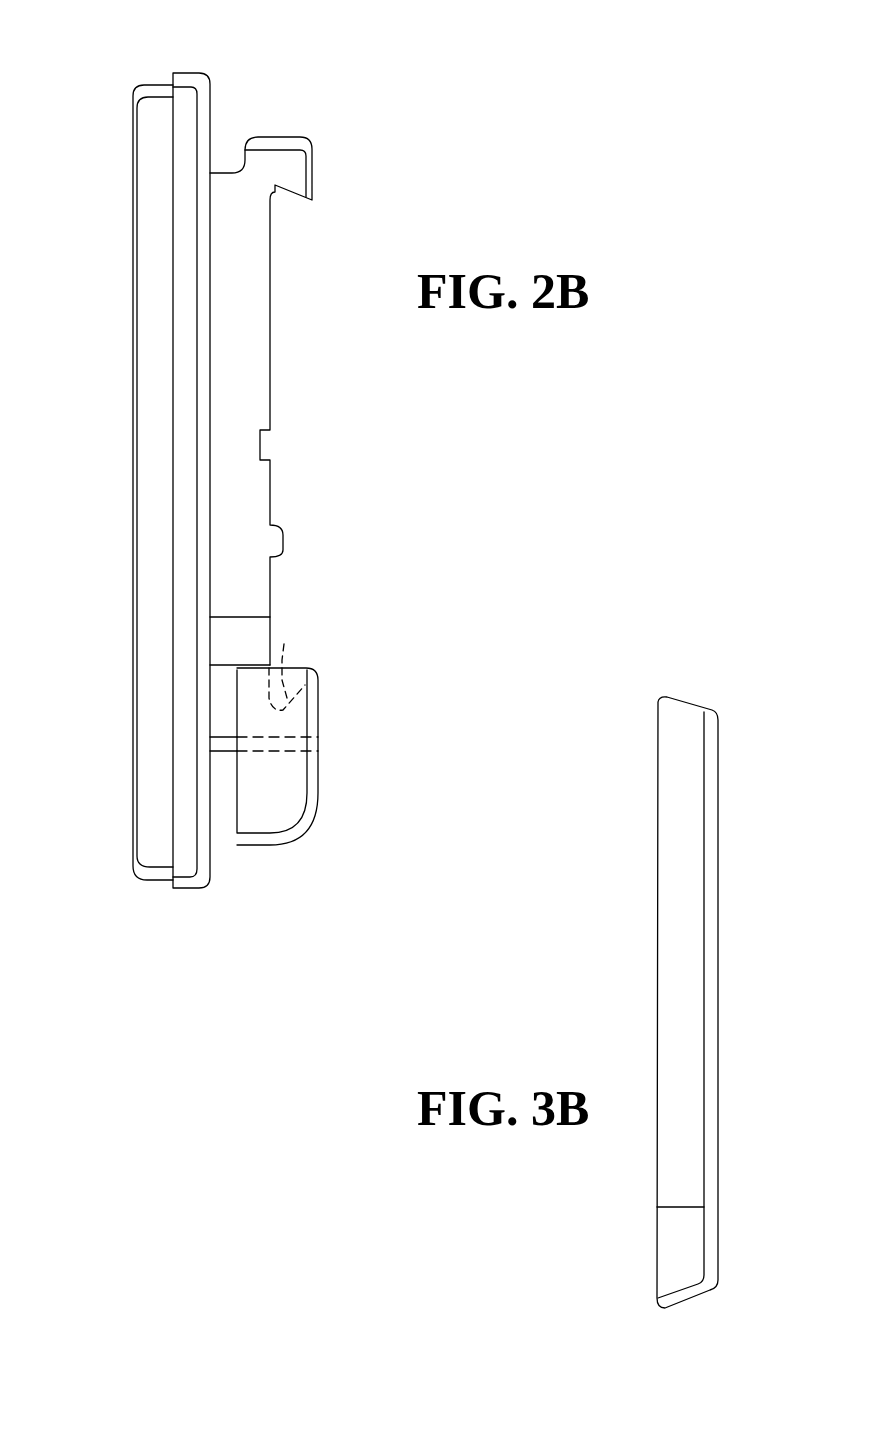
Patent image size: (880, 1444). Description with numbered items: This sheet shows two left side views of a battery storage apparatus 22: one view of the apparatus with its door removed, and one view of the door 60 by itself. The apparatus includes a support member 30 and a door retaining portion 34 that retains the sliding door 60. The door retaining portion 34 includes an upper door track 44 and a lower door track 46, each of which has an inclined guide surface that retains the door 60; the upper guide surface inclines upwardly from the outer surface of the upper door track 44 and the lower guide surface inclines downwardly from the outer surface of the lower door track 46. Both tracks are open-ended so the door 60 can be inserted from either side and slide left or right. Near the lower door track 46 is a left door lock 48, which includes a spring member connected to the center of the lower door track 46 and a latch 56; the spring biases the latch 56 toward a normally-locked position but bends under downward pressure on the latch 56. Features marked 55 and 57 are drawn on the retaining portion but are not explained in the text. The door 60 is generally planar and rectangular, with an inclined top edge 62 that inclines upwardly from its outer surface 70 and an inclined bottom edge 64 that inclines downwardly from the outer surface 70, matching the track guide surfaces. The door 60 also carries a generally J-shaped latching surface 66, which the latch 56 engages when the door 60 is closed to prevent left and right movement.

In FIG. 2B, the battery storage apparatus 22 is at (116, 62).
In FIG. 2B, the support member 30 is at (134, 243).
In FIG. 2B, the door retaining portion 34 is at (272, 137).
In FIG. 2B, the upper door track 44 is at (287, 164).
In FIG. 2B, the tab edge 55 is at (293, 193).
In FIG. 2B, the lower door track 46 is at (290, 725).
In FIG. 2B, the left door lock 48 is at (320, 803).
In FIG. 2B, the latch 56 is at (272, 818).
In FIG. 2B, the hidden tab 57 is at (285, 640).
In FIG. 3B, the door 60 is at (638, 684).
In FIG. 3B, the top edge 62 is at (692, 702).
In FIG. 3B, the bottom edge 64 is at (688, 1303).
In FIG. 3B, the latching surface 66 is at (685, 1245).
In FIG. 3B, the outer surface 70 is at (717, 942).